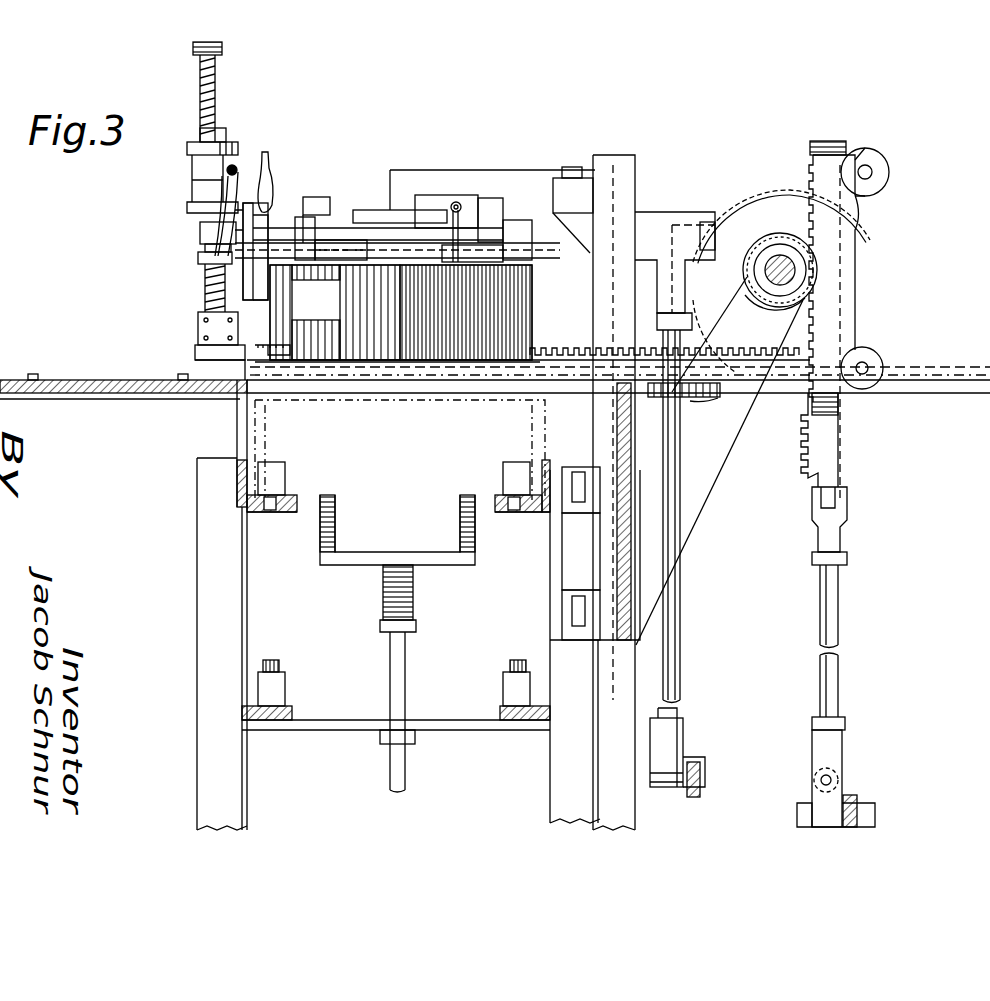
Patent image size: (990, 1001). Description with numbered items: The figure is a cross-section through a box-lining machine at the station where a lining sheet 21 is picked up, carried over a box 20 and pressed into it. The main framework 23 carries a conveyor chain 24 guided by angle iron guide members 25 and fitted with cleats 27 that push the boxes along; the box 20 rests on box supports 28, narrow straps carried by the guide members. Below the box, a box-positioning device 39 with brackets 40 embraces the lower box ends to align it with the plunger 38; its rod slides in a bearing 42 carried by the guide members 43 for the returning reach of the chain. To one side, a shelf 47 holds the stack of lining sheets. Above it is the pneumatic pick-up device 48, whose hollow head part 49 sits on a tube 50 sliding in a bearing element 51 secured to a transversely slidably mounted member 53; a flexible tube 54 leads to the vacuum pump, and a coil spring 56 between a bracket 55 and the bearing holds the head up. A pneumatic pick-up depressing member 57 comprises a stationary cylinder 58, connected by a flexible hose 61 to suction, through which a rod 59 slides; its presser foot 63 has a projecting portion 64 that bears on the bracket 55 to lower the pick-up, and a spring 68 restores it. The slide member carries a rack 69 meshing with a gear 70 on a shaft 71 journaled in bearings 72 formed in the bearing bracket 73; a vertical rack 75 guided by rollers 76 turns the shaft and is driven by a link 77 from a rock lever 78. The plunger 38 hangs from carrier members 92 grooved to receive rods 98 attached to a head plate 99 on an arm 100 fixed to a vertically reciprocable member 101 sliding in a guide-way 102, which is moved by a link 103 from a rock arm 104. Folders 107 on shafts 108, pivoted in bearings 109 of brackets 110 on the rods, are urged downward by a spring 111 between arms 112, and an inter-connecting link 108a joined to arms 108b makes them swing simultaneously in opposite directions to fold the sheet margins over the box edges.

The box 20 is at (398, 498).
The lining sheet 21 is at (84, 380).
The main framework 23 is at (240, 785).
The conveyor chain 24 is at (275, 660).
The angle iron guide member 25 is at (270, 514).
The cleat 27 is at (280, 470).
The box support 28 is at (296, 512).
The plunger 38 is at (532, 298).
The box-positioning device 39 is at (358, 566).
The bracket 40 is at (336, 526).
The bearing 42 is at (383, 742).
The guide member 43 is at (290, 708).
The shelf 47 is at (80, 400).
The pneumatic pick-up device 48 is at (193, 348).
The hollow head part 49 is at (200, 366).
The tube 50 is at (205, 296).
The bearing element 51 is at (198, 328).
The transversely slidably mounted member 53 is at (360, 362).
The flexible tube 54 is at (192, 188).
The bracket 55 is at (200, 264).
The coil spring 56 is at (205, 282).
The pneumatic pick-up depressing member 57 is at (250, 118).
The cylinder 58 is at (192, 162).
The rod 59 is at (216, 64).
The flexible hose 61 is at (264, 152).
The presser foot 63 is at (200, 244).
The projecting portion 64 is at (205, 256).
The spring 68 is at (200, 60).
The rack 69 is at (544, 355).
The gear 70 is at (858, 262).
The shaft 71 is at (780, 255).
The bearing 72 is at (756, 262).
The bearing bracket 73 is at (722, 462).
The rack 75 is at (828, 141).
The roller 76 is at (889, 168).
The link 77 is at (838, 642).
The rock lever 78 is at (856, 797).
The carrier member 92 is at (315, 197).
The rod 98 is at (342, 206).
The head plate 99 is at (385, 195).
The arm 100 is at (440, 170).
The vertically reciprocable member 101 is at (557, 178).
The guide-way 102 is at (635, 178).
The link 103 is at (672, 516).
The rock arm 104 is at (700, 786).
The folder 107 is at (335, 265).
The shaft 108 is at (432, 258).
The inter-connecting link 108a is at (248, 252).
The arm 108b is at (256, 290).
The bearing 109 is at (300, 265).
The bracket 110 is at (298, 200).
The spring 111 is at (458, 200).
The arm 112 is at (460, 200).